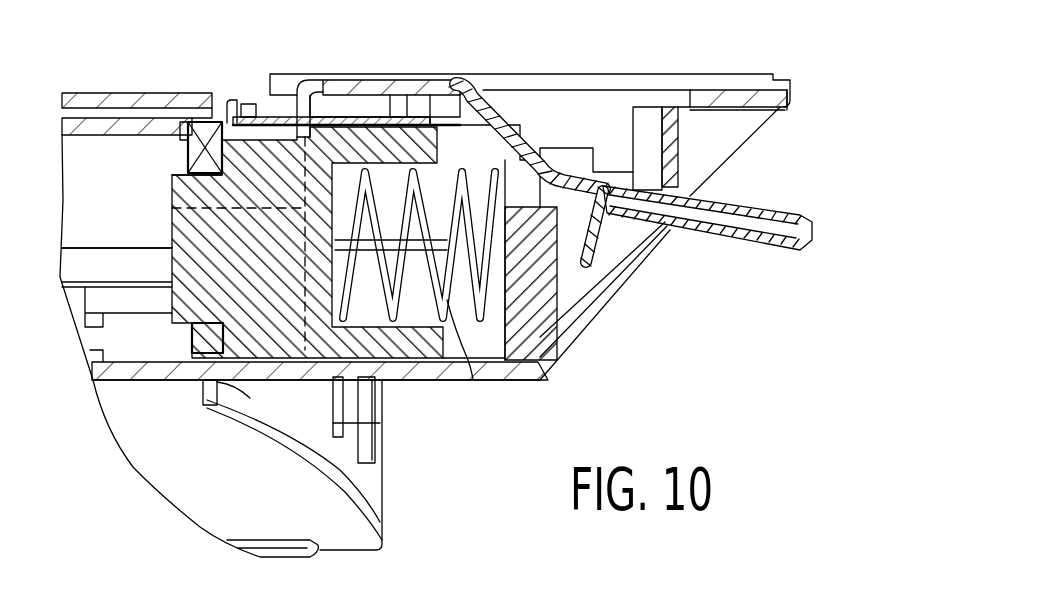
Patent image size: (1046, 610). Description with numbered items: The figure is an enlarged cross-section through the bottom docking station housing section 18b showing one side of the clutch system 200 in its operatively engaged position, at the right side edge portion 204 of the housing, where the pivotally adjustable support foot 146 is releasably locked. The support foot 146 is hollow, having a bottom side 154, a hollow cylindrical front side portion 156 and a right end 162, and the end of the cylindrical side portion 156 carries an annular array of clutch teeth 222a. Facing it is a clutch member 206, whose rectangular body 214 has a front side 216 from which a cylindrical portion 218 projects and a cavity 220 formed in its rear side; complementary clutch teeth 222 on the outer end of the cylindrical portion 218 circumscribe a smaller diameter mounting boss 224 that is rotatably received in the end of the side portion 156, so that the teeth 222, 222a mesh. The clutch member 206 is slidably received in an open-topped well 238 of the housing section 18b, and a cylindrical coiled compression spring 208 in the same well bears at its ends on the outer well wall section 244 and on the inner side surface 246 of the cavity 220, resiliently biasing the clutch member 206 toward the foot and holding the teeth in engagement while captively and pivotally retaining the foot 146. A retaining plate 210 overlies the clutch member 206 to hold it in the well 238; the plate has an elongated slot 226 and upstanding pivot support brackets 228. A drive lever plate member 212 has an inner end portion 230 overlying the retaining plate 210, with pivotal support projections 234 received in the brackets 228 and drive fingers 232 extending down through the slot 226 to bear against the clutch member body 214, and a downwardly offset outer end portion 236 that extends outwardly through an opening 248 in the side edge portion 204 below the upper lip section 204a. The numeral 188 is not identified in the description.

The mounting flange 188 is at (93, 93).
The hollow cylindrical front side portion 156 is at (102, 137).
The cylindrical mounting boss 224 is at (170, 222).
The bottom side 154 is at (232, 490).
The support foot 146 is at (390, 507).
The rectangular body 214 is at (257, 403).
The cylindrical portion 218 is at (205, 398).
The front side 216 is at (340, 424).
The right end 162 is at (378, 430).
The open-topped well area 238 is at (542, 366).
The bottom docking station housing section 18b is at (542, 384).
The inner side surface 246 is at (332, 260).
The clutch teeth 222 is at (212, 345).
The clutch teeth 222a is at (183, 133).
The drive fingers 232 is at (172, 208).
The clutch member 206 is at (247, 160).
The elongated slot 226 is at (260, 100).
The cavity 220 is at (388, 176).
The retaining plate 210 is at (345, 115).
The pivot support brackets 228 is at (373, 96).
The clutch system 200 is at (552, 105).
The inner end portion 230 is at (430, 73).
The drive lever plate member 212 is at (481, 90).
The pivotal support projections 234 is at (443, 135).
The cylindrical coiled compression spring 208 is at (466, 372).
The outer well wall section 244 is at (565, 305).
The right side edge portion 204 is at (643, 258).
The upper lip section 204a is at (732, 90).
The opening 248 is at (713, 143).
The downwardly offset outer end portion 236 is at (773, 205).